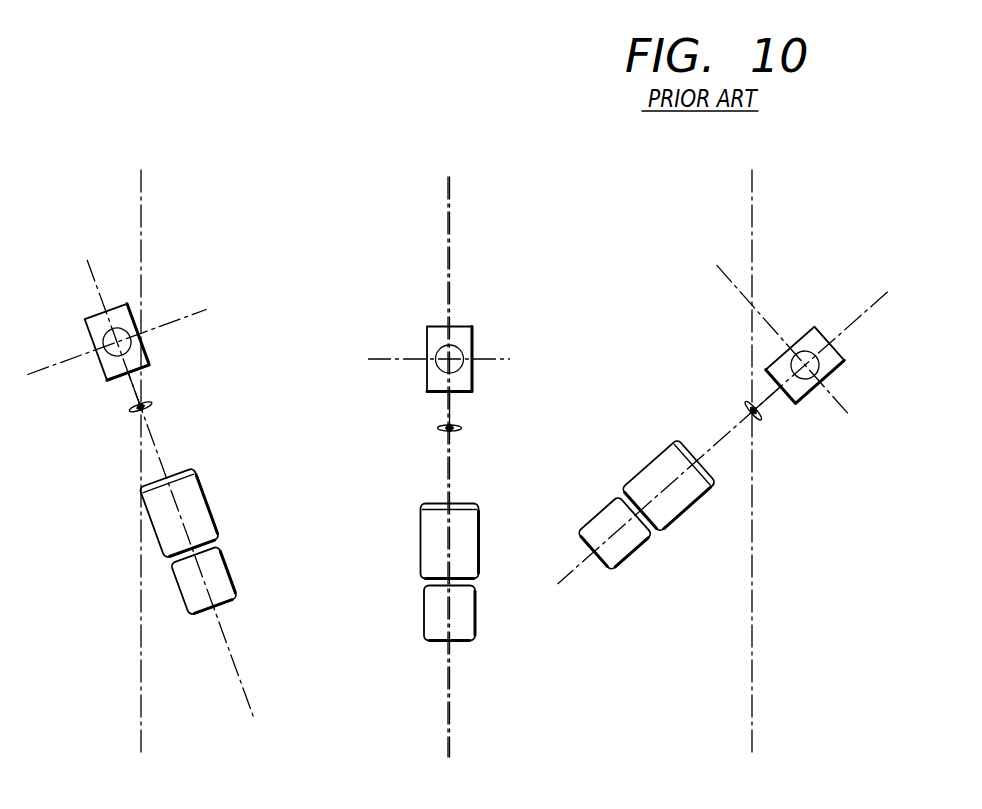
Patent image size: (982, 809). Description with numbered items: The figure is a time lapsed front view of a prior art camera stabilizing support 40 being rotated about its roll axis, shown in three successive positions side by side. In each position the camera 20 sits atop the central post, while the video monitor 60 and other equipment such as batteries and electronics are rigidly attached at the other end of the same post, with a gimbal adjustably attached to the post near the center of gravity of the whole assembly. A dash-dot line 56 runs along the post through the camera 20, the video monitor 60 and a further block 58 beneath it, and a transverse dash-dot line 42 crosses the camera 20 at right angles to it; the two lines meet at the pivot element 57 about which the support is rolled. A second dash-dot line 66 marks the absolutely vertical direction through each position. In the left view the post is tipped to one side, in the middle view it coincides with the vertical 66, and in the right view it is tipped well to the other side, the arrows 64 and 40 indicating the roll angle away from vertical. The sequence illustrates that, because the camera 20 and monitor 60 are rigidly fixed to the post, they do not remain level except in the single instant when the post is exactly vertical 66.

The camera 20 is at (95, 373).
The camera stabilizing support 40 is at (163, 447).
The transverse axis 42 is at (190, 312).
The longitudinal axis 56 is at (235, 660).
The pivot 57 is at (150, 410).
The lower block 58 is at (220, 582).
The video monitor 60 is at (202, 515).
The swing angle 64 is at (124, 418).
The vertical 66 is at (141, 209).